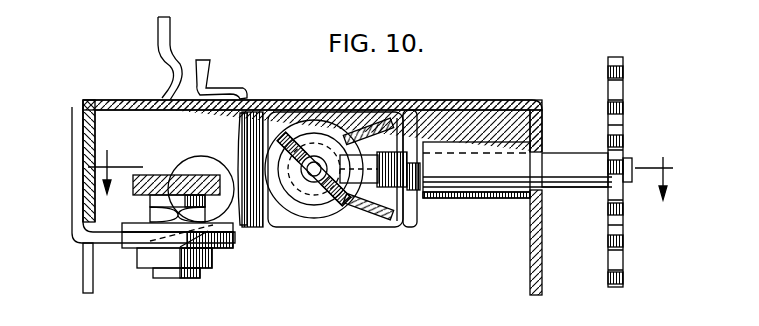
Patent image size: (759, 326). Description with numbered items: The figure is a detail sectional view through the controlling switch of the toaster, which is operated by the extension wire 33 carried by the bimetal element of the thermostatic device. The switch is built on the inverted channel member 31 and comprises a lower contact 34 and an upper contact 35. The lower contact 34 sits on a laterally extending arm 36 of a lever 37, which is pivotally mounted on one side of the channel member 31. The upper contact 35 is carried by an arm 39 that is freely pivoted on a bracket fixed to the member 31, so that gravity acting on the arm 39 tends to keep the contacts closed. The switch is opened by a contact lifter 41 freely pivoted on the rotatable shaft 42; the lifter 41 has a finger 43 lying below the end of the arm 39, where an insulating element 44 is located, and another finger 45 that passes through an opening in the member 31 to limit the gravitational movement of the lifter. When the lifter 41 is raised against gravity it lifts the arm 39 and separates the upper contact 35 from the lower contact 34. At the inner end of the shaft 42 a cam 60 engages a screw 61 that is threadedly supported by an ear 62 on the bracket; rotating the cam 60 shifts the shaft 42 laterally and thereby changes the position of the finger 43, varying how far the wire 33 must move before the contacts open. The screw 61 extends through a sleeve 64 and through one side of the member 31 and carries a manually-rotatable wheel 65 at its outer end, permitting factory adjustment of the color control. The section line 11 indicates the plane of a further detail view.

The section line 11 is at (119, 150).
The inverted channel member 31 is at (490, 103).
The extension wire 33 is at (158, 35).
The lower contact 34 is at (178, 213).
The upper contact 35 is at (178, 203).
The laterally extending arm 36 is at (108, 244).
The lever 37 is at (75, 143).
The arm 39 is at (150, 175).
The contact lifter 41 is at (235, 164).
The shaft 42 is at (300, 190).
The finger 43 is at (237, 233).
The insulating element 44 is at (186, 156).
The finger 45 is at (212, 72).
The cam 60 is at (316, 195).
The screw 61 is at (393, 218).
The ear 62 is at (413, 203).
The sleeve 64 is at (478, 198).
The manually-rotatable wheel 65 is at (623, 247).